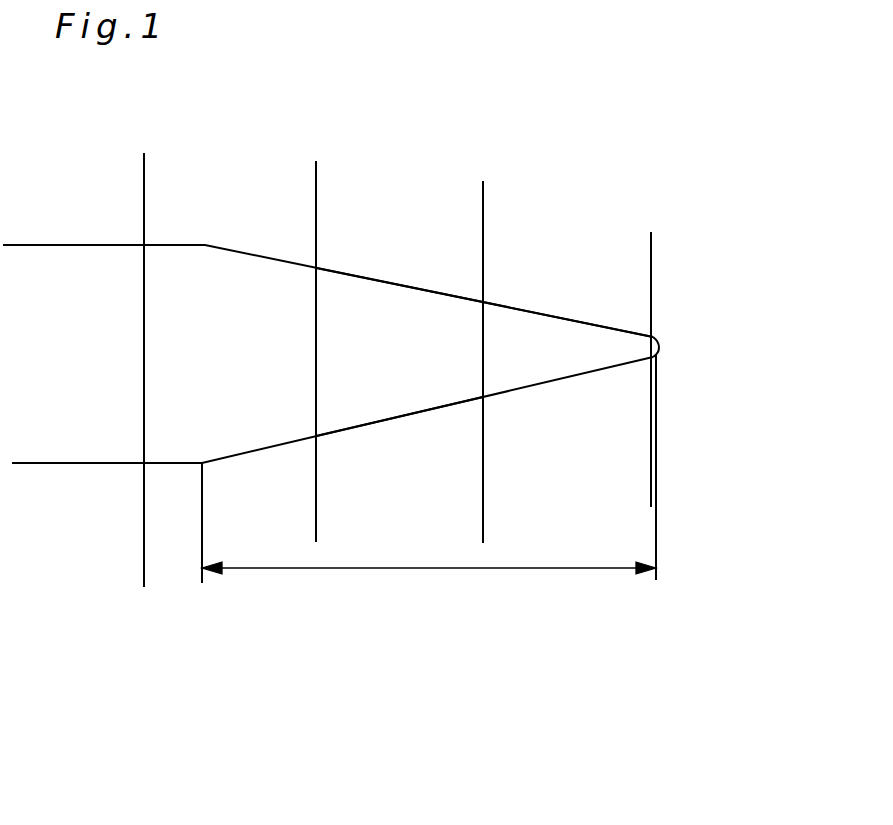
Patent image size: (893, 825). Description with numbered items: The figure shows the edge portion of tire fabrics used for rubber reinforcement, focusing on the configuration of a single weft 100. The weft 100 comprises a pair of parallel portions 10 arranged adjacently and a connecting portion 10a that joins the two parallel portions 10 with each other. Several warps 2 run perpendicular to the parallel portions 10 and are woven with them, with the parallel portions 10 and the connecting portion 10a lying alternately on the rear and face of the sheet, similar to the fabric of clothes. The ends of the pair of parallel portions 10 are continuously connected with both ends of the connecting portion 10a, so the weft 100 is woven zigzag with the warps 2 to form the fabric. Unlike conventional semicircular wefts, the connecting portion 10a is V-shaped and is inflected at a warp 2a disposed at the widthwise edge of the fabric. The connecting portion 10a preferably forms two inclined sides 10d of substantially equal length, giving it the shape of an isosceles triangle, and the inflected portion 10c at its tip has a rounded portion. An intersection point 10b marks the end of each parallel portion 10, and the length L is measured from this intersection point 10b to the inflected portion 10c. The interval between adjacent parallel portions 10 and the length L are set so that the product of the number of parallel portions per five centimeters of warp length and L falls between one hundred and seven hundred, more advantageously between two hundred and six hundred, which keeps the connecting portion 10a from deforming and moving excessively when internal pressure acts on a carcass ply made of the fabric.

The parallel portion 10 is at (37, 245).
The weft 100 is at (87, 245).
The warp 2 is at (147, 170).
The warp at edge 2a is at (655, 251).
The connecting portion 10a is at (510, 303).
The intersection point 10b is at (200, 466).
The inflected portion 10c is at (657, 352).
The inclined side 10d is at (368, 277).
The length L is at (429, 467).